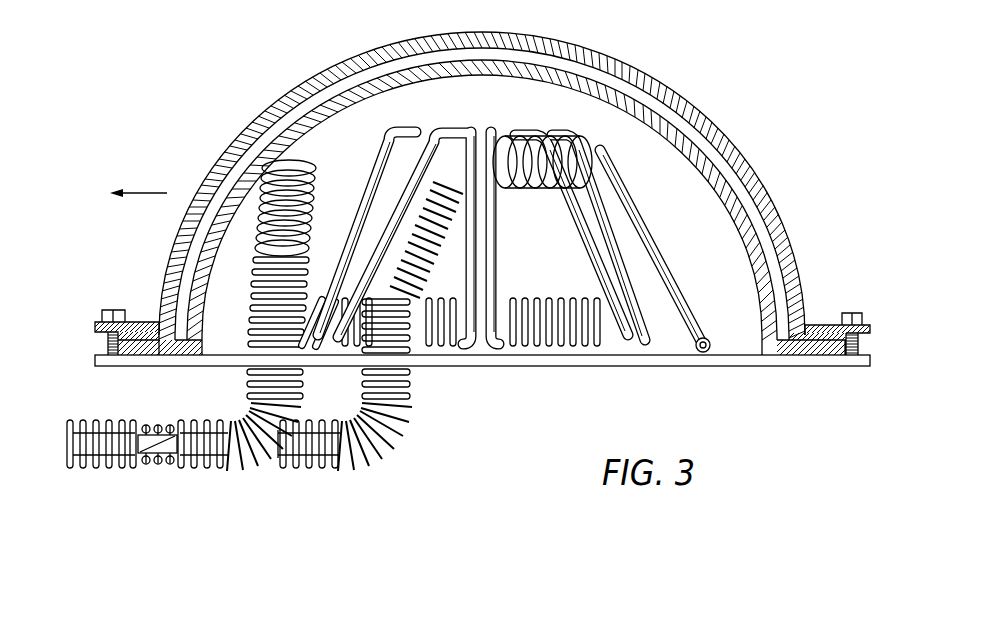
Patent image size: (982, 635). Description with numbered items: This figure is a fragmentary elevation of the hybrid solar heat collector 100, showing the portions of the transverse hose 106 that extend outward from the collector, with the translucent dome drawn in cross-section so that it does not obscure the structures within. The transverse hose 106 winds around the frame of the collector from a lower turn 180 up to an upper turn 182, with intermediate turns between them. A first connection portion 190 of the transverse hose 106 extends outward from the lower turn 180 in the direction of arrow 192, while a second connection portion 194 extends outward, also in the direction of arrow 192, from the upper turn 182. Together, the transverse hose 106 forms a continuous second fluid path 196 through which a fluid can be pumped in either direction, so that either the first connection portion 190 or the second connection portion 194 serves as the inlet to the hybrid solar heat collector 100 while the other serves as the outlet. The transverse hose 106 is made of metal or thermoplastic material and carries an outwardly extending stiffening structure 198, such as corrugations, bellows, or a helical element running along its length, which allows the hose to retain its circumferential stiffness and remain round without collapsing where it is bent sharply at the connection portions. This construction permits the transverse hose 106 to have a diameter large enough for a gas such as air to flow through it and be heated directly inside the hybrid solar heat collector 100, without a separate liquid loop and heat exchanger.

The hybrid solar heat collector 100 is at (742, 118).
The arrow 192 is at (143, 192).
The upper turn 182 is at (598, 158).
The lower turn 180 is at (523, 345).
The transverse hose 106 is at (116, 480).
The second fluid path 196 is at (157, 463).
The first connection portion 190 is at (223, 460).
The second connection portion 194 is at (315, 467).
The stiffening structure 198 is at (383, 440).